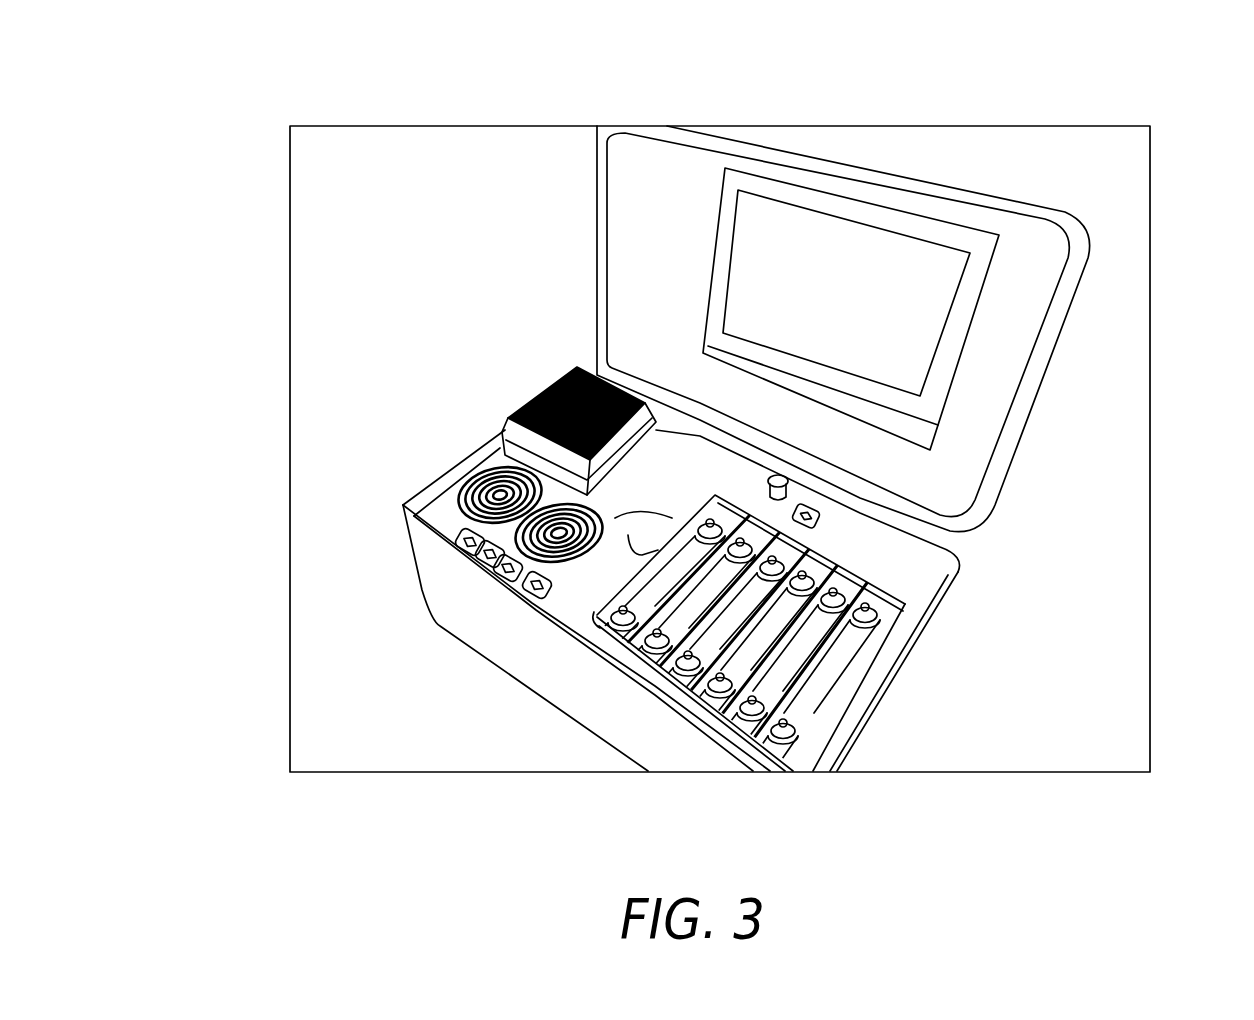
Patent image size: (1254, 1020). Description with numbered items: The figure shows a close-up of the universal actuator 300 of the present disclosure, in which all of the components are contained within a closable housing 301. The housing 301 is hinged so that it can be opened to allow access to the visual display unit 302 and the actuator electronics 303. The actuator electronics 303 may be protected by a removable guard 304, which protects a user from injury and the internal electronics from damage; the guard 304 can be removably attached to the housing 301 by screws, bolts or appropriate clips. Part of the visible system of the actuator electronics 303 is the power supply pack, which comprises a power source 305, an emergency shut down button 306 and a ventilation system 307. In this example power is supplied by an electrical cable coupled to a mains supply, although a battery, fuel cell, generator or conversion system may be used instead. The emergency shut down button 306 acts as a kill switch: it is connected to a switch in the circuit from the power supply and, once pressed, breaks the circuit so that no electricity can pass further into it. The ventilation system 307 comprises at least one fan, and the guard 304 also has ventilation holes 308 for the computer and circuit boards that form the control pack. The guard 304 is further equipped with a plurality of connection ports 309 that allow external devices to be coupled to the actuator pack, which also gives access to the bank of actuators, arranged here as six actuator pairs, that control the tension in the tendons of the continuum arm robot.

The universal actuator 300 is at (270, 82).
The closable housing 301 is at (1033, 252).
The visual display unit 302 is at (842, 240).
The actuator electronics 303 is at (793, 542).
The removable guard 304 is at (623, 523).
The power source 305 is at (555, 382).
The emergency shut down button 306 is at (787, 475).
The ventilation system 307 is at (502, 491).
The ventilation holes 308 is at (757, 448).
The connection ports 309 is at (463, 540).